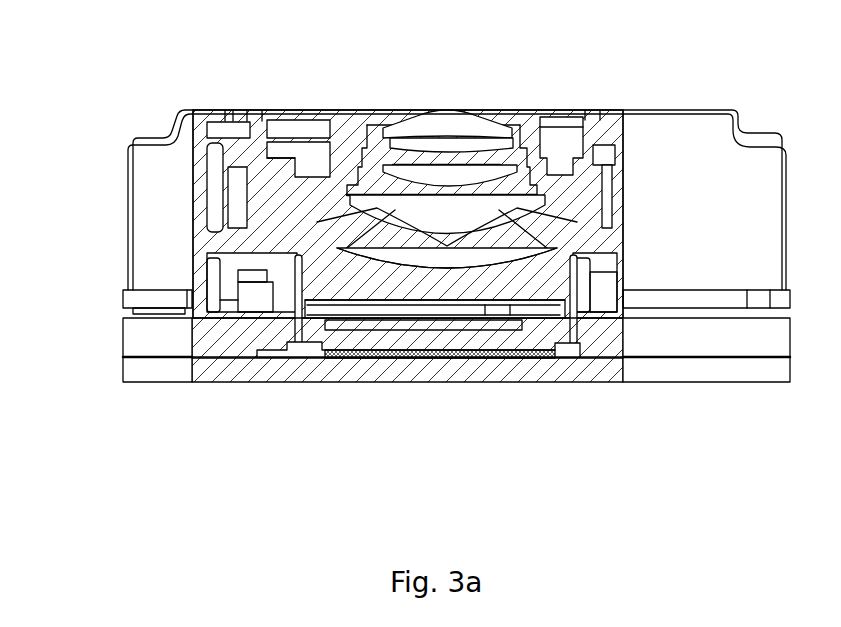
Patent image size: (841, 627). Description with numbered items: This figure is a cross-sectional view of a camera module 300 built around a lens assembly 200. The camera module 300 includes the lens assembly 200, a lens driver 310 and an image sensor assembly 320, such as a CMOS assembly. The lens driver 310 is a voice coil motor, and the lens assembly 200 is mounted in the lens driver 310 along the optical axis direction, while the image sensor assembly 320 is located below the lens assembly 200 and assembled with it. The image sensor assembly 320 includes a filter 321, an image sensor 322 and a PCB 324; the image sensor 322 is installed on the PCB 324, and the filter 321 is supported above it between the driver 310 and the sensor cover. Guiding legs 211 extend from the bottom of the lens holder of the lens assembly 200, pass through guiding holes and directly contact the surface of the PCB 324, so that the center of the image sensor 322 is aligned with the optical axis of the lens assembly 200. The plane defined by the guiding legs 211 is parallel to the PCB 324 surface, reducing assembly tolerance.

The camera module 300 is at (422, 234).
The lens assembly 200 is at (300, 193).
The lens driver 310 is at (190, 247).
The image sensor assembly 320 is at (422, 384).
The guiding legs 211 is at (298, 345).
The filter 321 is at (458, 327).
The image sensor 322 is at (488, 353).
The PCB 324 is at (433, 372).